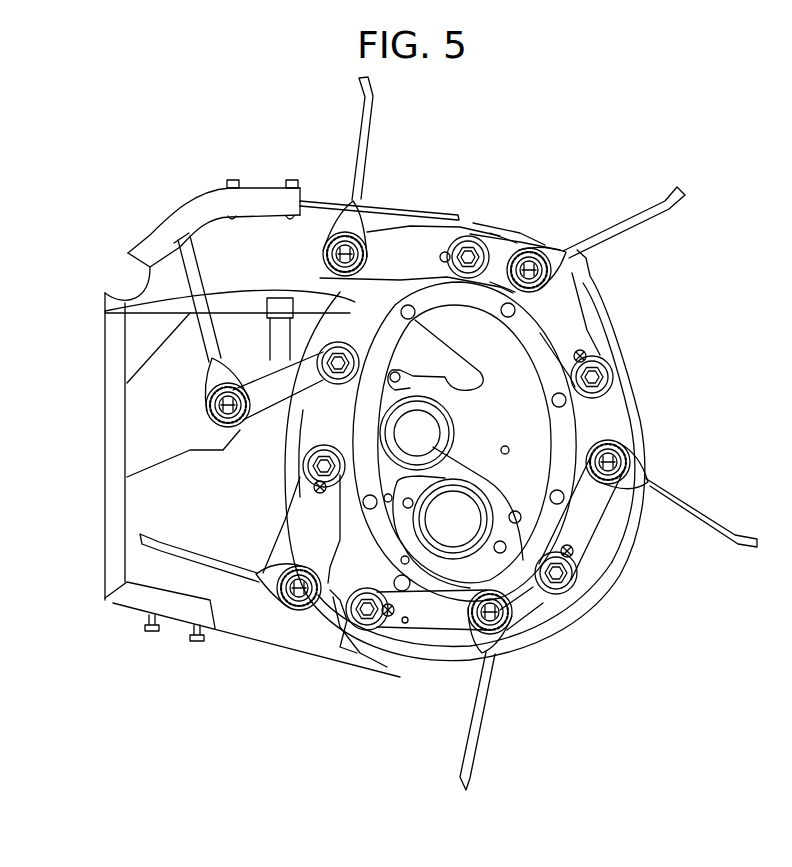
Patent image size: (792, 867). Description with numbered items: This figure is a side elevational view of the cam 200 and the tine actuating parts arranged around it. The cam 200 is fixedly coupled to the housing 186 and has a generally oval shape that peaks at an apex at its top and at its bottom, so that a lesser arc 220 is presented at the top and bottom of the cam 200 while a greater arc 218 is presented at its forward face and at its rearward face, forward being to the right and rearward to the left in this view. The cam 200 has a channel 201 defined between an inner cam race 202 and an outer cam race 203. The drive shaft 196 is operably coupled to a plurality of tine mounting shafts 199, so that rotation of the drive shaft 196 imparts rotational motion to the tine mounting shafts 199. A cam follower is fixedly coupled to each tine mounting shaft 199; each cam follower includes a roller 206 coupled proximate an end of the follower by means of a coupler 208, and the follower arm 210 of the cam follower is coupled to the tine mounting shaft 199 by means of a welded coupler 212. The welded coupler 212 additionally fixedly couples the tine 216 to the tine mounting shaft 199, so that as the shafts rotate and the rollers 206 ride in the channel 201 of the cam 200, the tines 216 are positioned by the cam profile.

The housing 186 is at (187, 200).
The drive shaft 196 is at (537, 600).
The tine mounting shaft 199 is at (510, 620).
The cam 200 is at (563, 418).
The channel 201 is at (630, 394).
The inner cam race 202 is at (587, 583).
The outer cam race 203 is at (328, 592).
The roller 206 is at (337, 603).
The coupler 208 is at (377, 620).
The follower arm 210 is at (405, 622).
The welded coupler 212 is at (470, 620).
The tine 216 is at (167, 547).
The greater arc 218 is at (583, 434).
The lesser arc 220 is at (127, 313).